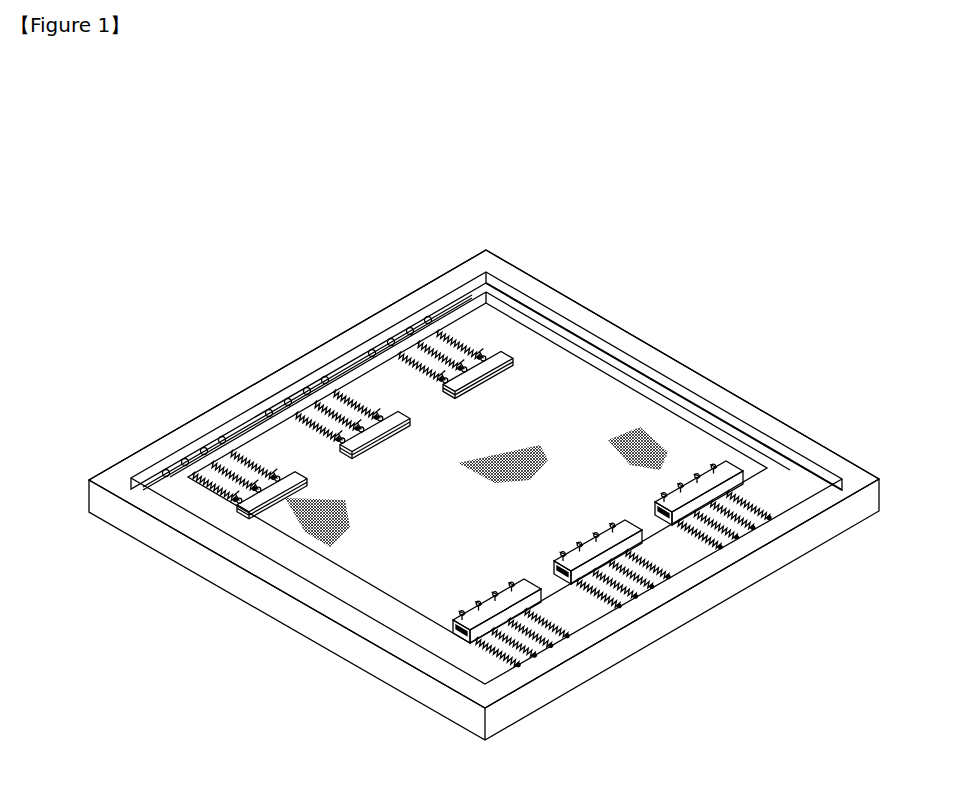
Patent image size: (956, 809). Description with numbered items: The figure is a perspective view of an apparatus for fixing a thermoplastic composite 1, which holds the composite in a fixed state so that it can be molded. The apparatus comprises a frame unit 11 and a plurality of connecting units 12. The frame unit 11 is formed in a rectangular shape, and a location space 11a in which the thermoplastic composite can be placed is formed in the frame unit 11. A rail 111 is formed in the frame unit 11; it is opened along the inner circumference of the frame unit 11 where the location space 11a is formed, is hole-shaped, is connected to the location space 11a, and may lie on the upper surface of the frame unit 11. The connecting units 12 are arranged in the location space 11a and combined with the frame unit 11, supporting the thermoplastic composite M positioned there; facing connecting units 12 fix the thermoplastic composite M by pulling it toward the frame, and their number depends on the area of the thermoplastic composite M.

The apparatus for fixing a thermoplastic composite 1 is at (396, 162).
The frame unit 11 is at (672, 342).
The rail 111 is at (458, 302).
The location space 11a is at (378, 388).
The connecting unit 12 is at (495, 336).
The thermoplastic composite M is at (390, 566).